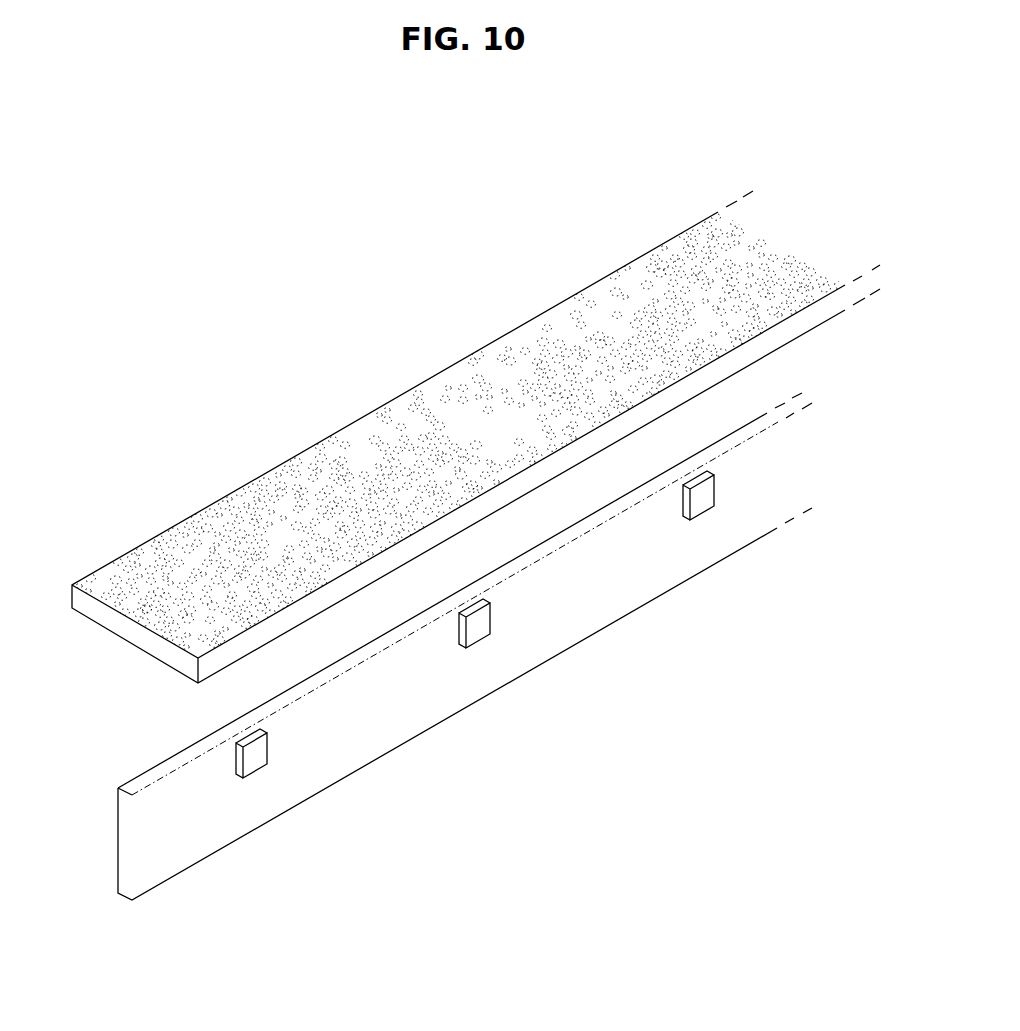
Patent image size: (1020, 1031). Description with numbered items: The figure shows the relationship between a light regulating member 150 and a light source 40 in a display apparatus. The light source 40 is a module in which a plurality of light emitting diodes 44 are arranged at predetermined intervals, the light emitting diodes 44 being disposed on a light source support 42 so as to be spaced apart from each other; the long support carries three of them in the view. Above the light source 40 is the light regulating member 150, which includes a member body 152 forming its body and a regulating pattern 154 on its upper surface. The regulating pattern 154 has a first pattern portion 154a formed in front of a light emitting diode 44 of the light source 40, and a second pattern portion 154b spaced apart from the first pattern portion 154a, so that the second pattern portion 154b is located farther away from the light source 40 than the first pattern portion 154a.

The light regulating member 150 is at (198, 528).
The member body 152 is at (120, 627).
The regulating pattern 154 is at (344, 453).
The first pattern portion 154a is at (252, 550).
The second pattern portion 154b is at (143, 603).
The light source 40 is at (423, 810).
The light source support 42 is at (360, 752).
The light emitting diode 44 is at (253, 763).